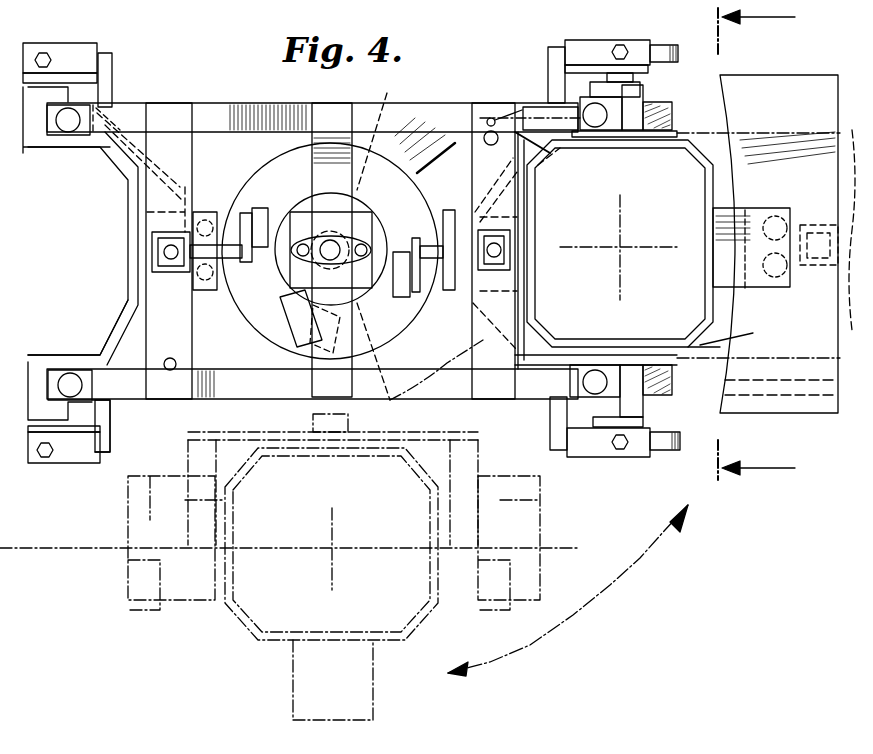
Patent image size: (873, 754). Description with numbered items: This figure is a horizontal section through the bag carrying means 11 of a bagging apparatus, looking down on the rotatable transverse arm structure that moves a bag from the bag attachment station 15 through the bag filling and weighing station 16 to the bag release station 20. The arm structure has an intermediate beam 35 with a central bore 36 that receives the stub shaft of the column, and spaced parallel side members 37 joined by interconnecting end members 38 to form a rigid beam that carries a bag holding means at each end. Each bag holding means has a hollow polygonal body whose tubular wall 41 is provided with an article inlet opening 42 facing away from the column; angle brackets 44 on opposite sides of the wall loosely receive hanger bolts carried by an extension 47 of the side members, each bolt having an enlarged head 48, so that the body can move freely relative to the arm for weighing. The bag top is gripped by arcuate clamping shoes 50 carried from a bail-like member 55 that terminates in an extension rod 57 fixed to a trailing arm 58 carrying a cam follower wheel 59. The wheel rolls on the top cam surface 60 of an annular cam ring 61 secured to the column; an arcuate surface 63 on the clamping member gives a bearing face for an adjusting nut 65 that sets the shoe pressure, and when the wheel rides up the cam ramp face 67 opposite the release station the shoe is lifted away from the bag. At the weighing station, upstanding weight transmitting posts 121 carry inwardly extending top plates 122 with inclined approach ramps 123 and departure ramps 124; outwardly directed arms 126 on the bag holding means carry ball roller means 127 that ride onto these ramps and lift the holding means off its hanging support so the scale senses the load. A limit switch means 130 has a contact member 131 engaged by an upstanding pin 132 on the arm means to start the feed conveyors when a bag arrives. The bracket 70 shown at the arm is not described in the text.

The bag carrying means 11 is at (186, 75).
The bag attachment station 15 is at (80, 269).
The bag filling and weighing station 16 is at (614, 252).
The bag release station 20 is at (290, 567).
The intermediate beam 35 is at (326, 112).
The central bore 36 is at (330, 252).
The side members 37 is at (219, 116).
The end members 38 is at (166, 396).
The tubular wall 41 is at (80, 350).
The article inlet opening 42 is at (732, 335).
The angle brackets 44 is at (76, 106).
The extension 47 is at (106, 120).
The enlarged head 48 is at (68, 122).
The clamping shoes 50 is at (666, 104).
The bail-like member 55 is at (186, 165).
The extension rod 57 is at (428, 250).
The trailing arm 58 is at (414, 302).
The cam follower wheel 59 is at (404, 293).
The top cam surface 60 is at (323, 238).
The annular cam ring 61 is at (246, 311).
The arcuate surface 63 is at (651, 446).
The adjusting nut 65 is at (620, 46).
The cam ramp face 67 is at (304, 345).
The clamp bracket 70 is at (158, 251).
The weight transmitting posts 121 is at (815, 272).
The top plates 122 is at (447, 362).
The approach ramps 123 is at (770, 90).
The departure ramps 124 is at (810, 396).
The arms 126 is at (760, 216).
The ball roller means 127 is at (236, 214).
The limit switch means 130 is at (530, 106).
The contact member 131 is at (492, 118).
The upstanding pin 132 is at (488, 130).